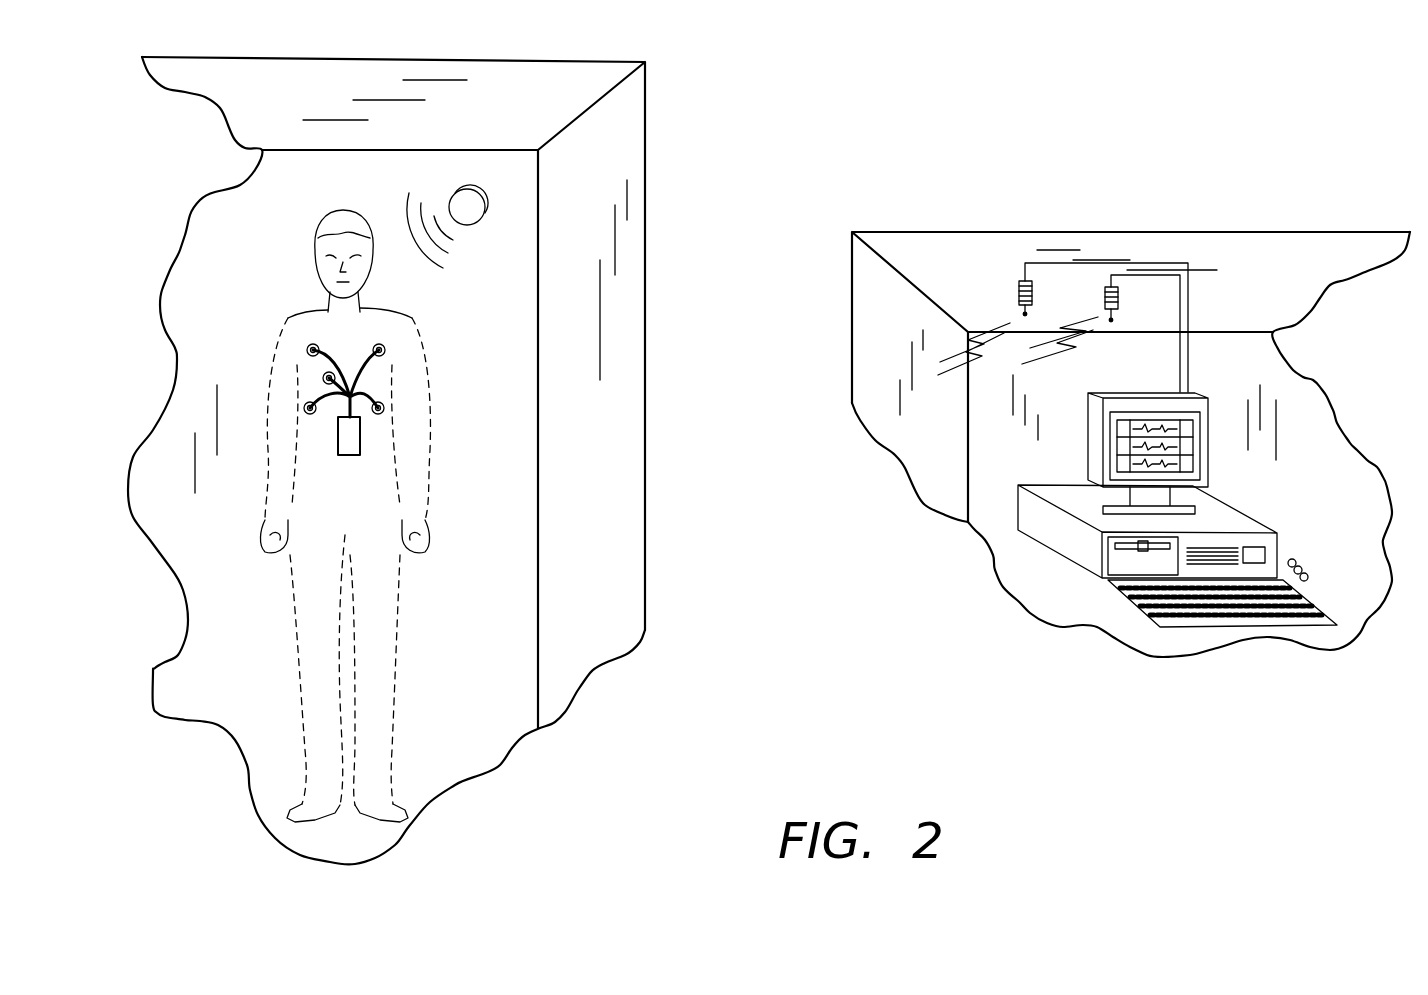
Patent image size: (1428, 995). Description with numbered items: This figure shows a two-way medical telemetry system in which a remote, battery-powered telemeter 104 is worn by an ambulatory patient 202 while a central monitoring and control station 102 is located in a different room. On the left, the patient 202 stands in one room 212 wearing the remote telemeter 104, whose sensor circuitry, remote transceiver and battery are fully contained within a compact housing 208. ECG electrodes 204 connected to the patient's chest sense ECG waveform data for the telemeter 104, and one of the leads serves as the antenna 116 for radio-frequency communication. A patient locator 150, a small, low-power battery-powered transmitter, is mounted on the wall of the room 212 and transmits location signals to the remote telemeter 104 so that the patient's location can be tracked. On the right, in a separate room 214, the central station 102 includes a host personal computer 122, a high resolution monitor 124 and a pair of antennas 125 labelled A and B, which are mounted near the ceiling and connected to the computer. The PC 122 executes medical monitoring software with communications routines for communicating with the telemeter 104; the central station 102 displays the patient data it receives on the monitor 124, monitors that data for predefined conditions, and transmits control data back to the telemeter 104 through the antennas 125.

The room 212 is at (405, 58).
The patient locator 150 is at (465, 205).
The patient 202 is at (303, 315).
The antenna 116 is at (318, 392).
The ECG electrodes 204 is at (371, 392).
The housing 208 is at (362, 455).
The remote telemeter 104 is at (366, 488).
The room 214 is at (1003, 232).
The antennas 125 is at (1112, 287).
The high resolution monitor 124 is at (1213, 423).
The host personal computer 122 is at (1265, 512).
The central monitoring and control station 102 is at (1303, 414).